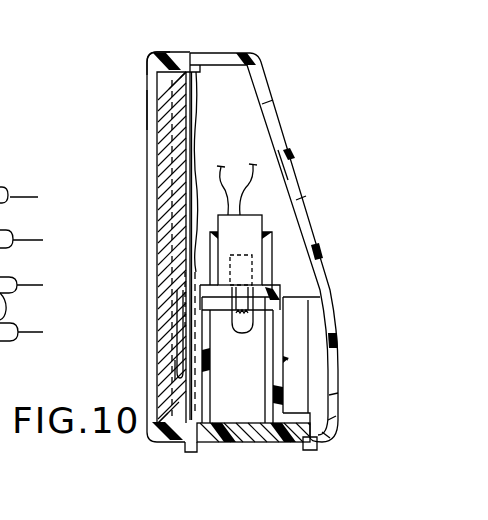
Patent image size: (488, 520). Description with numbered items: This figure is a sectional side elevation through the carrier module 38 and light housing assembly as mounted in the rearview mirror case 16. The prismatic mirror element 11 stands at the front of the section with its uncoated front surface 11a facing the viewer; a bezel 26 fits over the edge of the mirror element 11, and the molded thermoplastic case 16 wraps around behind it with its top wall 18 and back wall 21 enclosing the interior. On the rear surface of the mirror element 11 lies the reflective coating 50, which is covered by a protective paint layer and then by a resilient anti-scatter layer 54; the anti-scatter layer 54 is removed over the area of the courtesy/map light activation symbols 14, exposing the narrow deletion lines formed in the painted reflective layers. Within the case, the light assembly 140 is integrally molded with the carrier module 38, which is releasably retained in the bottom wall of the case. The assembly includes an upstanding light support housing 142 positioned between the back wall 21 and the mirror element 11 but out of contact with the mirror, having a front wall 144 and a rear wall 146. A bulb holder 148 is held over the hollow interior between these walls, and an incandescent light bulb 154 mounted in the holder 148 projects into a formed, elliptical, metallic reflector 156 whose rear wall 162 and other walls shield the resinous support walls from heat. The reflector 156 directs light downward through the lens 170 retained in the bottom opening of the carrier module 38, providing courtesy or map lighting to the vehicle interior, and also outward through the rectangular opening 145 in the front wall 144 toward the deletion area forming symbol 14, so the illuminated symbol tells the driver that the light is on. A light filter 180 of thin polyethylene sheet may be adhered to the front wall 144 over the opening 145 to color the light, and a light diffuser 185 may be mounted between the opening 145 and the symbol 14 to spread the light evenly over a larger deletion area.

The prismatic mirror element 11 is at (156, 184).
The uncoated front surface 11a is at (155, 117).
The courtesy/map light activation symbols 14 is at (172, 370).
The mirror case 16 is at (262, 60).
The top wall 18 is at (205, 55).
The back wall 21 is at (300, 153).
The bezel 26 is at (151, 70).
The carrier module 38 is at (185, 452).
The reflective coating 50 is at (193, 114).
The anti-scatter layer 54 is at (196, 147).
The light assembly 140 is at (290, 243).
The light support housing 142 is at (283, 305).
The front wall 144 is at (178, 333).
The rectangular opening 145 is at (198, 400).
The rear wall 146 is at (283, 350).
The bulb holder 148 is at (250, 222).
The incandescent light bulb 154 is at (239, 330).
The reflector 156 is at (290, 288).
The rear wall of reflector 162 is at (286, 378).
The lens 170 is at (217, 443).
The light filter 180 is at (158, 292).
The light diffuser 185 is at (150, 310).